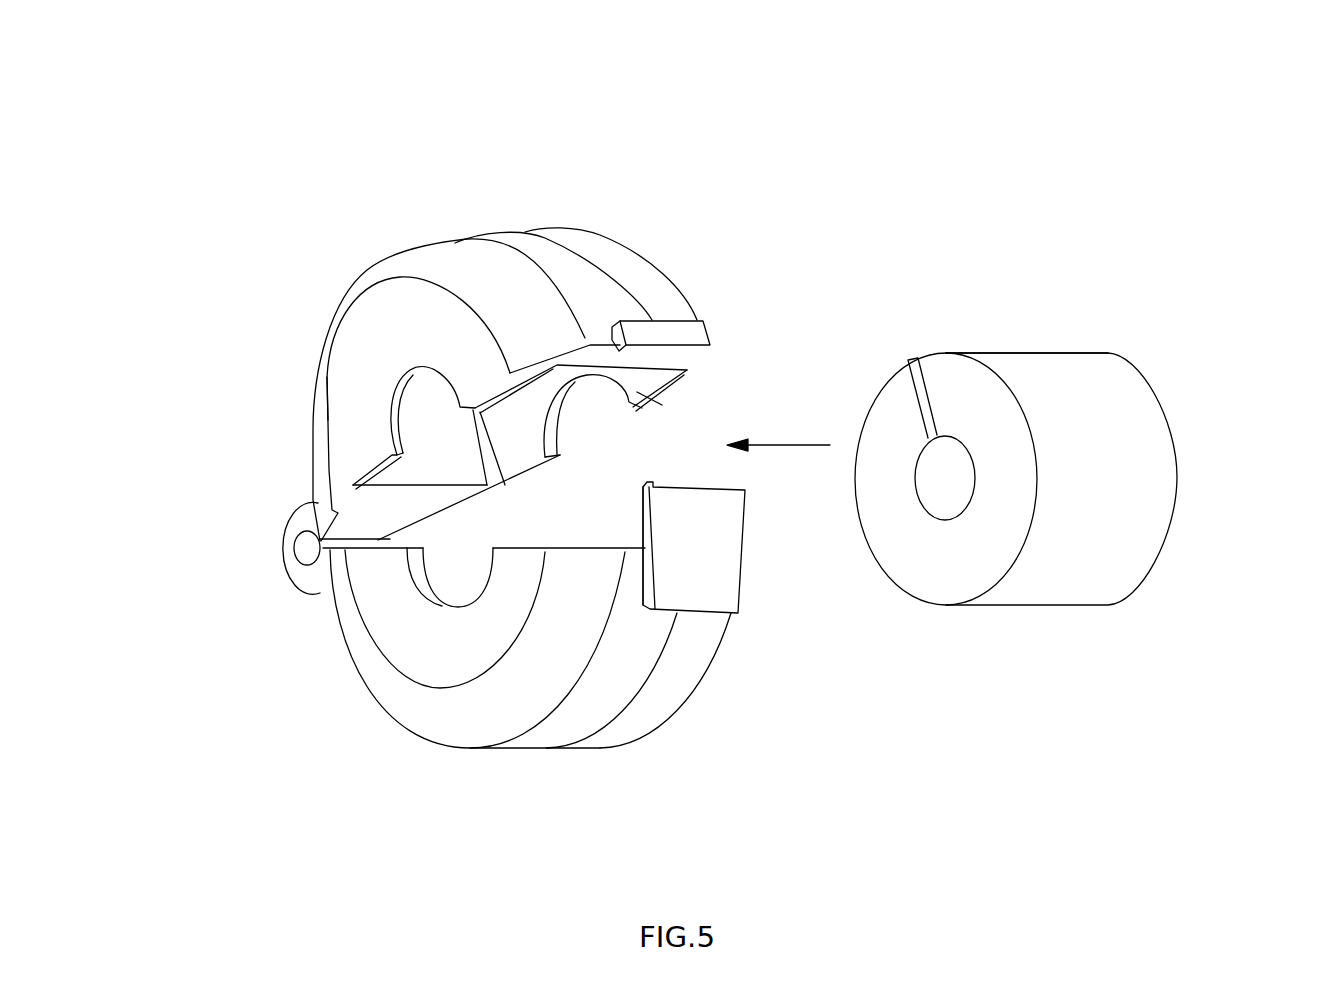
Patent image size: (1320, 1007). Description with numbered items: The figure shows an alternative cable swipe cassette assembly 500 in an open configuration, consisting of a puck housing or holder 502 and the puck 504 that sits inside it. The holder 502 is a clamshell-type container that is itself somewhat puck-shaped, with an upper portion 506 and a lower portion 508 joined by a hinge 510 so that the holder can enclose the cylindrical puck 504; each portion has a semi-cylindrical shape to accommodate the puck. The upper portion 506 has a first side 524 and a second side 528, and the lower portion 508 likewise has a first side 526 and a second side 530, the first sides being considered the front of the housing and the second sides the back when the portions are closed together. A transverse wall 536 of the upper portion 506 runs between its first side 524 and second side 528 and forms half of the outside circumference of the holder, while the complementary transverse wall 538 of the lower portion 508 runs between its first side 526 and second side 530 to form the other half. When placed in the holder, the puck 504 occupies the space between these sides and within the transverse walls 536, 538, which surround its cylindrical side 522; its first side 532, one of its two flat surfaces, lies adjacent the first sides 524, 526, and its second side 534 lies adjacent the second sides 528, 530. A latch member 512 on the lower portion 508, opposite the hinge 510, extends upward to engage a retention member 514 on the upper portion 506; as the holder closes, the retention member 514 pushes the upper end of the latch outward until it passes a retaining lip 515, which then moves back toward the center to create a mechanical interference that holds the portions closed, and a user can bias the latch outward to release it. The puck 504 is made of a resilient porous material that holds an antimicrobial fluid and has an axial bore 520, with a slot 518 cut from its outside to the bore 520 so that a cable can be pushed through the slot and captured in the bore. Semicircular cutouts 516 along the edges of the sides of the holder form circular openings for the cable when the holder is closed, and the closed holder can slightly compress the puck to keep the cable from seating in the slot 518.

The cable swipe cassette assembly 500 is at (1103, 51).
The puck housing or holder 502 is at (295, 371).
The puck 504 is at (1200, 415).
The upper portion 506 is at (377, 262).
The lower portion 508 is at (387, 713).
The hinge 510 is at (285, 541).
The latch member 512 is at (723, 535).
The retention member 514 is at (700, 325).
The retaining lip 515 is at (650, 483).
The semicircular cutouts 516 is at (452, 558).
The slot 518 is at (922, 390).
The bore 520 is at (950, 487).
The cylindrical side 522 is at (1015, 585).
The first side of the upper portion 524 is at (347, 413).
The first side of the lower portion 526 is at (443, 657).
The second side of the upper portion 528 is at (690, 368).
The second side of the lower portion 530 is at (703, 680).
The first side of the puck 532 is at (960, 582).
The second side of the puck 534 is at (1167, 532).
The transverse wall of the upper portion 536 is at (495, 242).
The transverse wall of the lower portion 538 is at (557, 749).